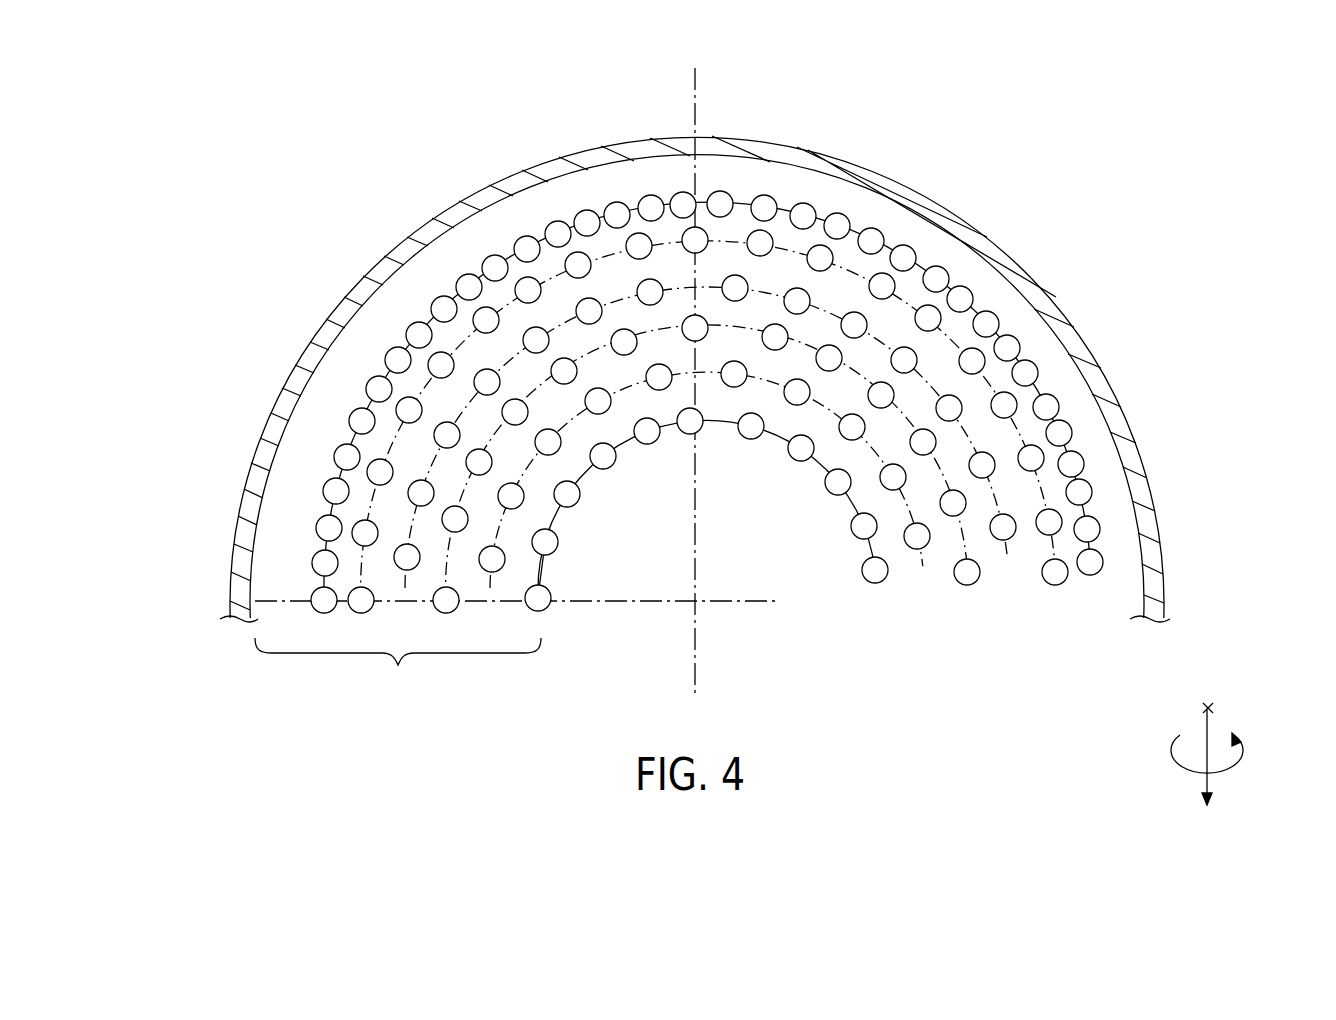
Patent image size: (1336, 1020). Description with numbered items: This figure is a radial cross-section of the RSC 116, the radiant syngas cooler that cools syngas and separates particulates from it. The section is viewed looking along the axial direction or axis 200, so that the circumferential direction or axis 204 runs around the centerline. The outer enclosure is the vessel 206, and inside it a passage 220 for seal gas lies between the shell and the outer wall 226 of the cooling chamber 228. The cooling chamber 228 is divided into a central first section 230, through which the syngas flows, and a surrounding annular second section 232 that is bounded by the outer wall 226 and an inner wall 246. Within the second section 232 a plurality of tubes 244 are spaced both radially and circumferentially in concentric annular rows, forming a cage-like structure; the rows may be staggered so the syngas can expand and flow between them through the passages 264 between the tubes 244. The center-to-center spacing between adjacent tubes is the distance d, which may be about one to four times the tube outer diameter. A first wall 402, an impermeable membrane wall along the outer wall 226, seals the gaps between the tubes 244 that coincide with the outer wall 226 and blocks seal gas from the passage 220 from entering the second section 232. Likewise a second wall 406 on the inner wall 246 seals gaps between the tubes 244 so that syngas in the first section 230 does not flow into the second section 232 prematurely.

The RSC 116 is at (232, 150).
The axial direction or axis 200 is at (1202, 732).
The circumferential direction or axis 204 is at (1227, 772).
The vessel 206 is at (368, 274).
The passage 220 is at (322, 415).
The outer wall 226 is at (535, 220).
The cooling chamber 228 is at (951, 735).
The first section 230 is at (753, 635).
The second section 232 is at (398, 669).
The plurality of tubes 244 is at (1088, 560).
The inner wall 246 is at (641, 470).
The passages 264 is at (933, 555).
The first wall 402 is at (1072, 514).
The second wall 406 is at (541, 571).
The distance d is at (833, 446).